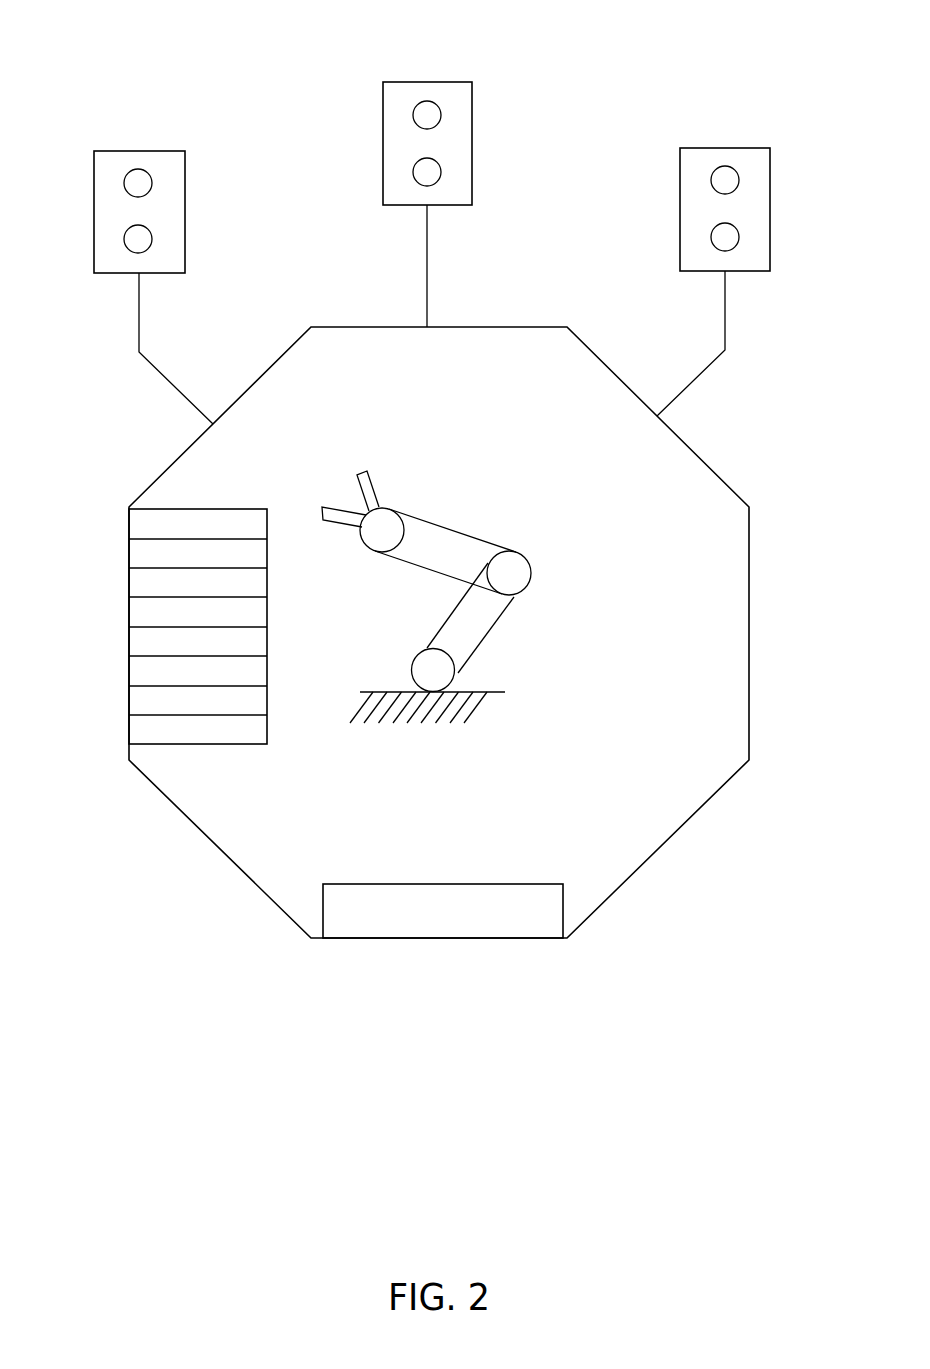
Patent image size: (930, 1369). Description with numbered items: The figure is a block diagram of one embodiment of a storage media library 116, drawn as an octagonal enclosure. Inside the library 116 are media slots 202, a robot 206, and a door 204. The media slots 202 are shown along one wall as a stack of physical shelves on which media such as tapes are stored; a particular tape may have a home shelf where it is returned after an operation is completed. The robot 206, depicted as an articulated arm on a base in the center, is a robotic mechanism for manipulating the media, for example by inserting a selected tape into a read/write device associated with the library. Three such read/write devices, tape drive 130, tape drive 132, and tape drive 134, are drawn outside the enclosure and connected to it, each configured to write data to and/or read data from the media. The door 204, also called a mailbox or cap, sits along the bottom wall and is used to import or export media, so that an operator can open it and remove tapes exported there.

The storage media library 116 is at (647, 860).
The tape drive 130 is at (162, 150).
The tape drive 132 is at (441, 77).
The tape drive 134 is at (754, 145).
The media slots 202 is at (130, 607).
The door 204 is at (458, 940).
The robot 206 is at (505, 618).